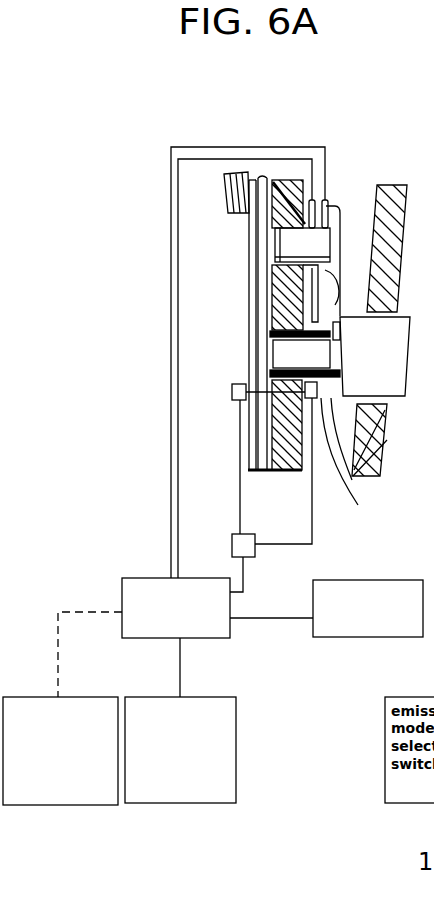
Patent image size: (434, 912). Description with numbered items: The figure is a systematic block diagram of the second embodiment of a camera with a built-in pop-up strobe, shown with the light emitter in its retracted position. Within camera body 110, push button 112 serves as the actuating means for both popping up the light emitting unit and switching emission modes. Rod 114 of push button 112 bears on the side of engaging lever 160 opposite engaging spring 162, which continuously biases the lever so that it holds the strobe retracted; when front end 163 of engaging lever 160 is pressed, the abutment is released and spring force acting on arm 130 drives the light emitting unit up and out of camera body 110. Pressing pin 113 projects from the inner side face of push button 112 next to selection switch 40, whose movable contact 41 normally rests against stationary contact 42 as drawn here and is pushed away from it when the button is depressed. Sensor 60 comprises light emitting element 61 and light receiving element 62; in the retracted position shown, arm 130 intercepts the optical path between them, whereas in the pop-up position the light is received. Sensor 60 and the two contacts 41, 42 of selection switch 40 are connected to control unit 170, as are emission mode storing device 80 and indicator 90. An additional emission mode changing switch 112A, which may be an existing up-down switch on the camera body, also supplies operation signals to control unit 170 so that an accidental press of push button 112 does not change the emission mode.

The selection switch 40 is at (341, 198).
The stationary contact 42 is at (344, 313).
The movable contact 41 is at (280, 322).
The camera body 110 is at (396, 262).
The push button 112 is at (408, 372).
The pressing pin 113 is at (384, 450).
The rod 114 is at (366, 467).
The arm 130 is at (256, 470).
The engaging lever 160 is at (253, 295).
The engaging spring 162 is at (223, 197).
The front end 163 is at (253, 360).
The sensor 60 is at (232, 545).
The light emitting element 61 is at (232, 392).
The light receiving element 62 is at (330, 500).
The control unit 170 is at (210, 640).
The indicator 90 is at (378, 638).
The emission mode changing switch 112A is at (68, 806).
The emission mode storing device 80 is at (172, 805).